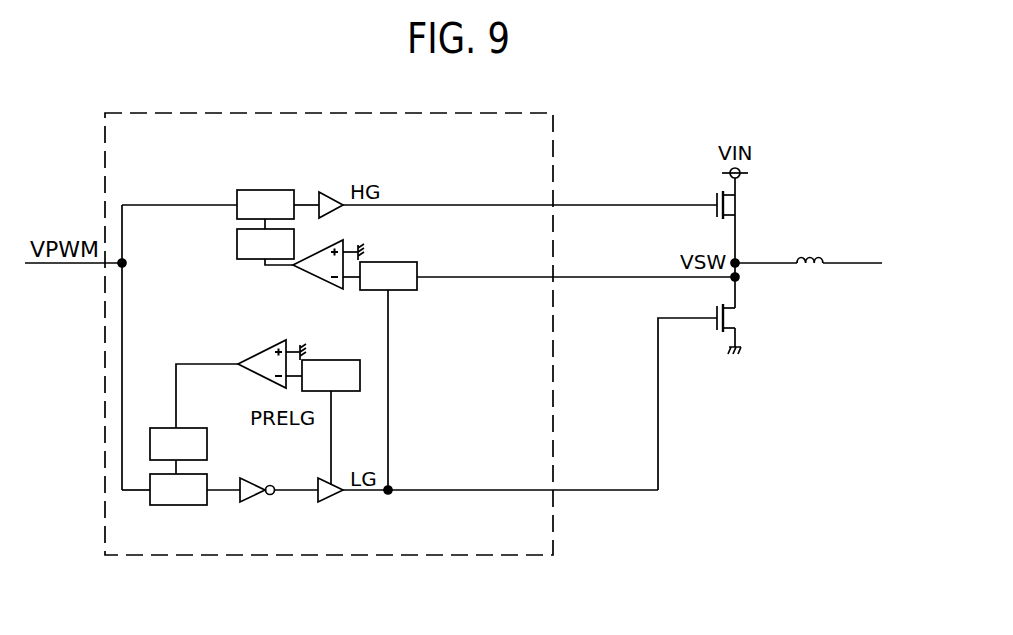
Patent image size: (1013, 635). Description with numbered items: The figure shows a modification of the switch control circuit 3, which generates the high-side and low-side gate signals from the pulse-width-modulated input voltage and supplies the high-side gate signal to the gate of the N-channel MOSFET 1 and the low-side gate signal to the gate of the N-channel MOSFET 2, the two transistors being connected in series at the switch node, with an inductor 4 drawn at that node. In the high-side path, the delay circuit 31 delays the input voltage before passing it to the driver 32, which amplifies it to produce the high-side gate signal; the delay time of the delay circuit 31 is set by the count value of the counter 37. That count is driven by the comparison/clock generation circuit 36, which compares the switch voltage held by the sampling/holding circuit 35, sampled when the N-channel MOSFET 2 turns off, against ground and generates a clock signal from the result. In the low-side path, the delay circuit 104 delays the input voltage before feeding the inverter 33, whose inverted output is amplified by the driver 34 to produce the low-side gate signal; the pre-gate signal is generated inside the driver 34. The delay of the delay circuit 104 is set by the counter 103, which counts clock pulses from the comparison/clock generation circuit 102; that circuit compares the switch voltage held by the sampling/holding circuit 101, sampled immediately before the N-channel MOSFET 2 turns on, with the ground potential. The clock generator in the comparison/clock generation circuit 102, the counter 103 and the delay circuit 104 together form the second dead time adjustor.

The N-channel MOSFET 1 is at (741, 208).
The N-channel MOSFET 2 is at (741, 321).
The switch control circuit 3 is at (313, 112).
The inductor 4 is at (809, 254).
The delay circuit 31 is at (266, 190).
The driver 32 is at (319, 192).
The inverter 33 is at (252, 503).
The driver 34 is at (329, 503).
The sampling/holding circuit 35 is at (389, 257).
The comparison/clock generation circuit 36 is at (323, 251).
The counter 37 is at (252, 259).
The sampling/holding circuit 101 is at (332, 360).
The comparison/clock generation circuit 102 is at (266, 346).
The counter 103 is at (197, 428).
The delay circuit 104 is at (178, 505).